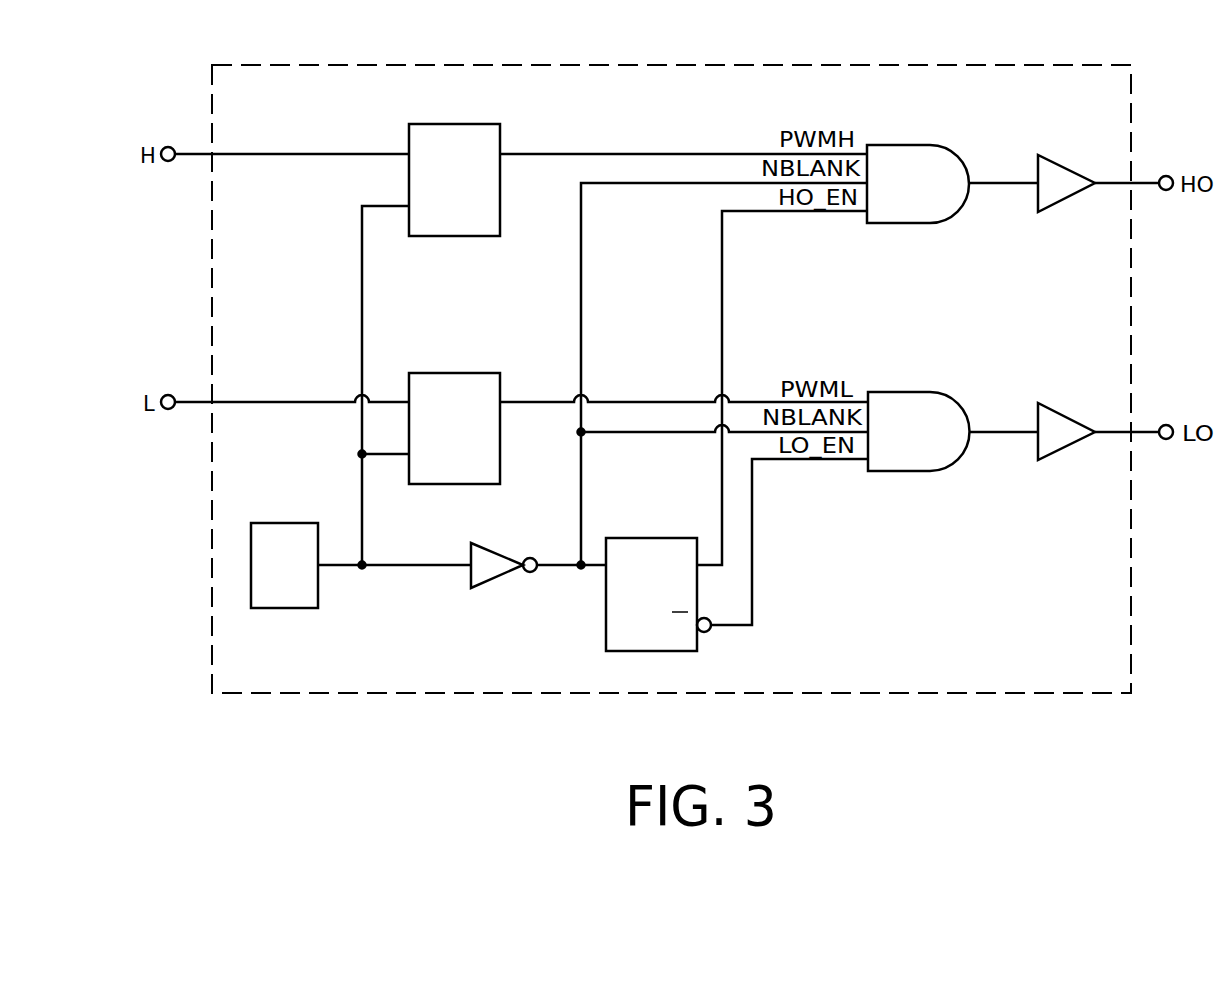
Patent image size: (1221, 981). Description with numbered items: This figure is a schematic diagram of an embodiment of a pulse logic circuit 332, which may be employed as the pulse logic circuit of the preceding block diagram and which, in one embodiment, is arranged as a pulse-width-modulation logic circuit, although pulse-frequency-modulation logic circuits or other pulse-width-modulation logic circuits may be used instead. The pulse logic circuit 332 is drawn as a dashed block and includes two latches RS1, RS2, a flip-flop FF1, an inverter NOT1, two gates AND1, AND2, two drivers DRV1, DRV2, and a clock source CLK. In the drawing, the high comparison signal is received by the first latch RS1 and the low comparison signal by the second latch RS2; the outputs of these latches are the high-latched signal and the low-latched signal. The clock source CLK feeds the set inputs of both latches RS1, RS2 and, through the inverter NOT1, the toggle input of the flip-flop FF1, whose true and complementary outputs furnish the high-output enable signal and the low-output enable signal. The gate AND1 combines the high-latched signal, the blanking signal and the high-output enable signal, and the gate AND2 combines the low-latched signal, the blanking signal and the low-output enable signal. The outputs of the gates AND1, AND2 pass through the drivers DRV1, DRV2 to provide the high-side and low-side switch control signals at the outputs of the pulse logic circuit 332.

The pulse logic circuit 332 is at (821, 65).
The latch RS1 is at (454, 195).
The latch RS2 is at (454, 444).
The clock source CLK is at (284, 565).
The inverter NOT1 is at (500, 580).
The flip-flop FF1 is at (658, 610).
The gate AND1 is at (918, 184).
The gate AND2 is at (919, 431).
The driver DRV1 is at (1068, 200).
The driver DRV2 is at (1068, 448).